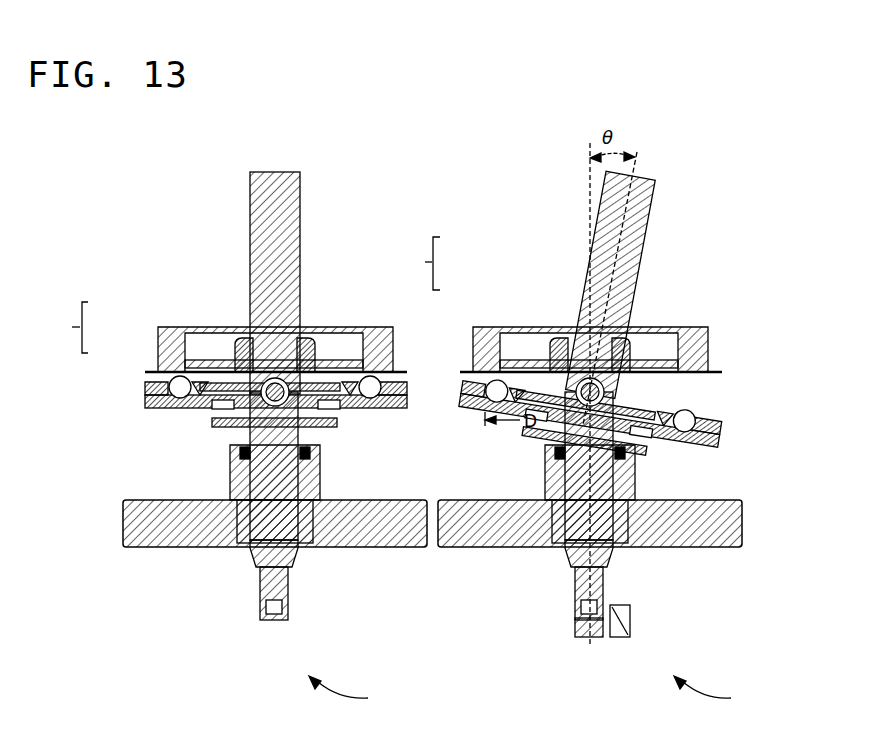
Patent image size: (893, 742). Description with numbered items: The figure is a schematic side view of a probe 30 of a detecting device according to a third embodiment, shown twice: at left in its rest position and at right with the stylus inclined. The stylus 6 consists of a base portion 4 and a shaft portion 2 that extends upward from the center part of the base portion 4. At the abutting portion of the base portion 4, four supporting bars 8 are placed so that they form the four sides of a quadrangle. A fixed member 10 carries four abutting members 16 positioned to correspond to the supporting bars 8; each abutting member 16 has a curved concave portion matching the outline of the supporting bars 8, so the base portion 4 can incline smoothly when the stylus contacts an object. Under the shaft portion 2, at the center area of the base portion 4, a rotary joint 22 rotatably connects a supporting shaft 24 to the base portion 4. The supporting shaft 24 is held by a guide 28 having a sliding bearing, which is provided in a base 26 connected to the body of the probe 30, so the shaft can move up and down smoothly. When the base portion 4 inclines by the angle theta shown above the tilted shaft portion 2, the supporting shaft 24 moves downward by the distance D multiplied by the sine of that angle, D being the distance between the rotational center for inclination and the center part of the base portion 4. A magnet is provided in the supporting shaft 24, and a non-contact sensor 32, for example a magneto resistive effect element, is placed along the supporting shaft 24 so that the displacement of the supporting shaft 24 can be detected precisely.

The shaft portion 2 is at (262, 290).
The base portion 4 is at (150, 397).
The stylus 6 is at (247, 295).
The supporting bars 8 is at (158, 405).
The fixed member 10 is at (378, 355).
The abutting members 16 is at (188, 398).
The rotary joint 22 is at (240, 425).
The supporting shaft 24 is at (262, 480).
The base 26 is at (350, 537).
The guide 28 is at (293, 557).
The probe 30 is at (398, 698).
The non-contact sensor 32 is at (630, 625).